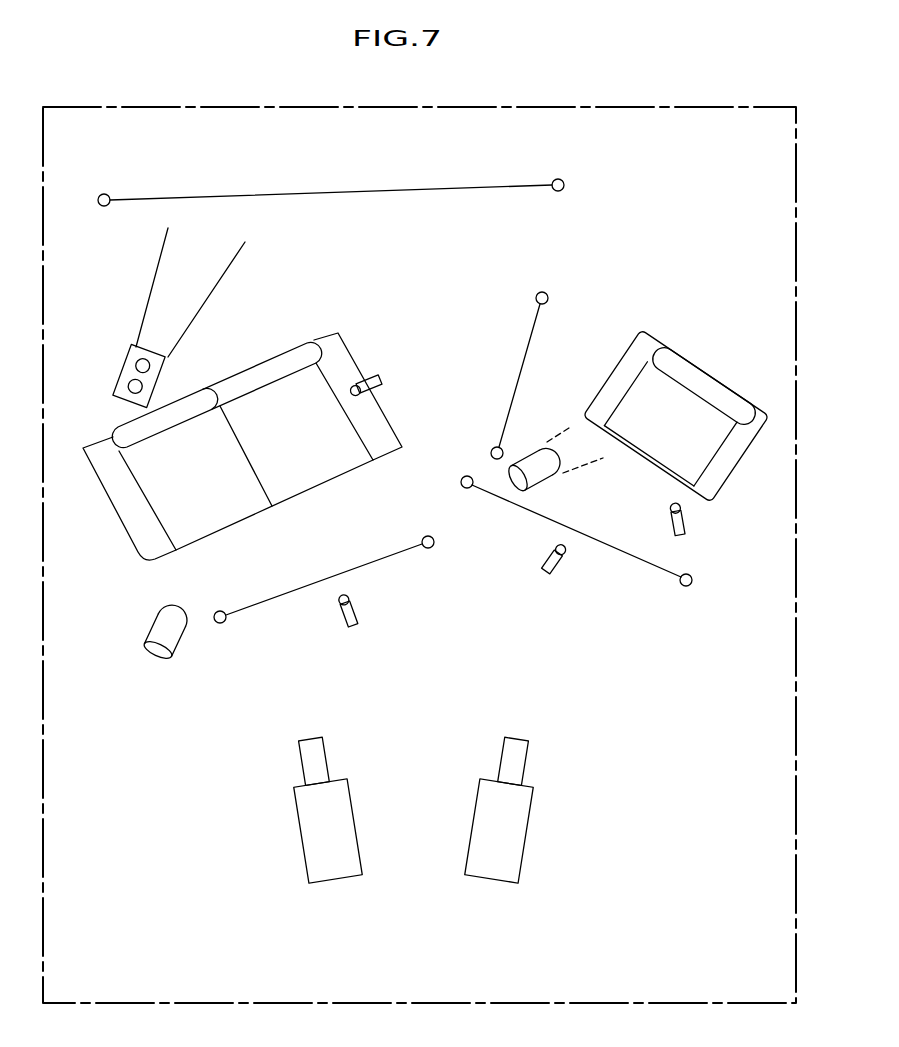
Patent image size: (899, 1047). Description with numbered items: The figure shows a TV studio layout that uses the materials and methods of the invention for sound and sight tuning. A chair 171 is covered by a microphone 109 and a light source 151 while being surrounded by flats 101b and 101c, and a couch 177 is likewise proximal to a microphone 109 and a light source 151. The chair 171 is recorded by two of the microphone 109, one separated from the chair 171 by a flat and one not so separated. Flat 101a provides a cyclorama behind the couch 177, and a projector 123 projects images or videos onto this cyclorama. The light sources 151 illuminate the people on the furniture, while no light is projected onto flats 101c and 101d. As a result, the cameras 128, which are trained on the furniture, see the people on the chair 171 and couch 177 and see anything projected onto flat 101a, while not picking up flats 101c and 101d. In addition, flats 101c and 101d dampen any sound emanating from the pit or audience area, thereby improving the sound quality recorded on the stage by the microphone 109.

The flat 101a is at (137, 198).
The flat 101b is at (547, 292).
The flat 101c is at (658, 568).
The flat 101d is at (300, 587).
The microphone 109 is at (382, 381).
The projector 123 is at (123, 378).
The camera 128 is at (312, 872).
The light source 151 is at (536, 468).
The chair 171 is at (742, 445).
The couch 177 is at (108, 477).